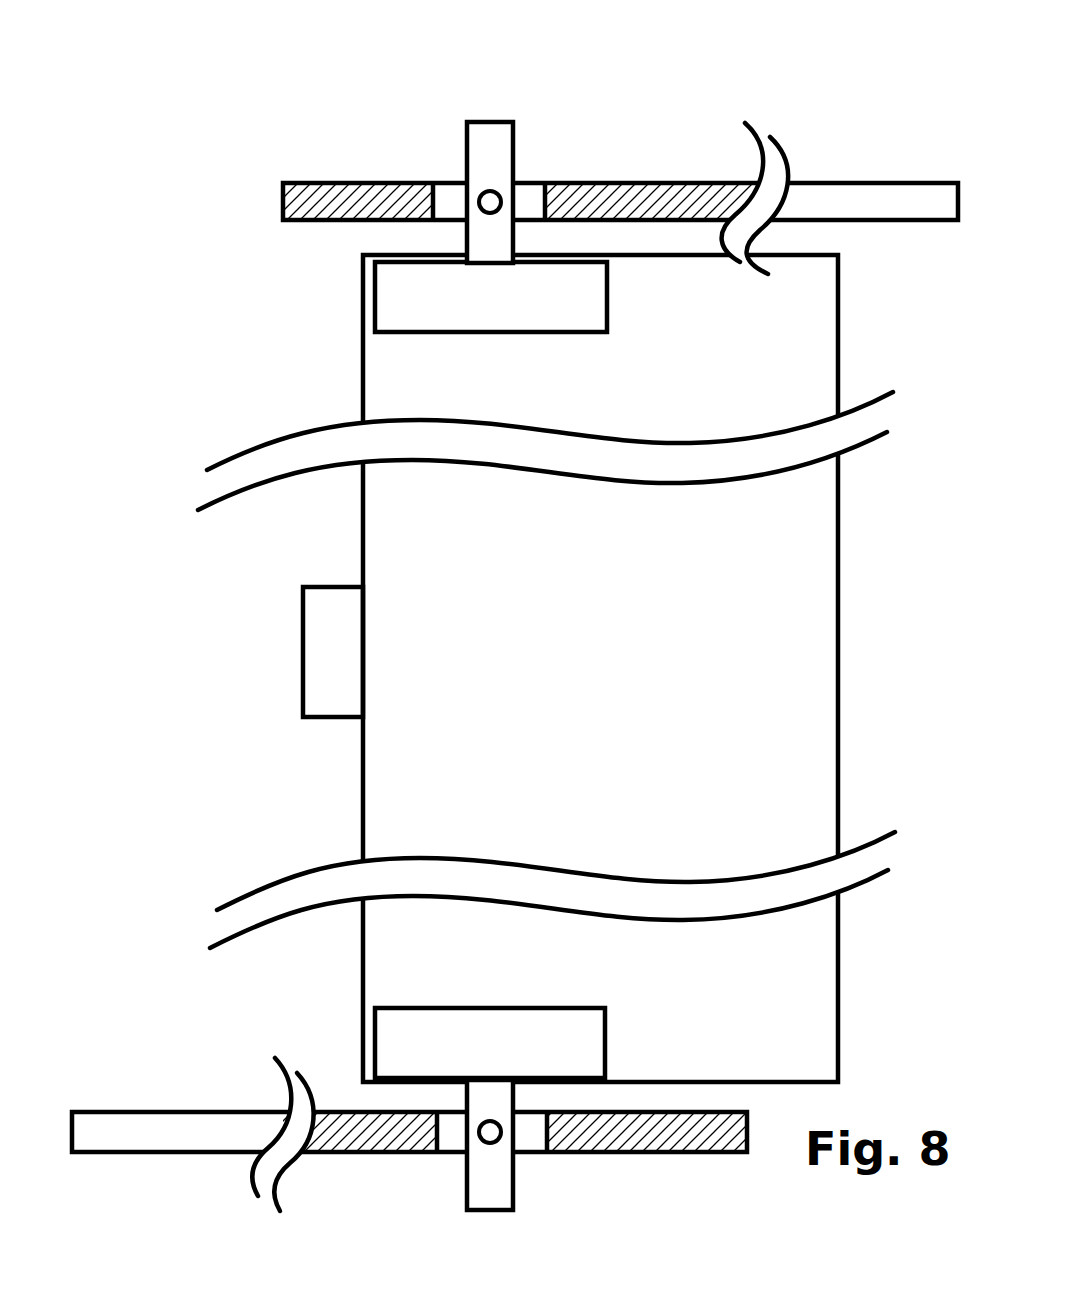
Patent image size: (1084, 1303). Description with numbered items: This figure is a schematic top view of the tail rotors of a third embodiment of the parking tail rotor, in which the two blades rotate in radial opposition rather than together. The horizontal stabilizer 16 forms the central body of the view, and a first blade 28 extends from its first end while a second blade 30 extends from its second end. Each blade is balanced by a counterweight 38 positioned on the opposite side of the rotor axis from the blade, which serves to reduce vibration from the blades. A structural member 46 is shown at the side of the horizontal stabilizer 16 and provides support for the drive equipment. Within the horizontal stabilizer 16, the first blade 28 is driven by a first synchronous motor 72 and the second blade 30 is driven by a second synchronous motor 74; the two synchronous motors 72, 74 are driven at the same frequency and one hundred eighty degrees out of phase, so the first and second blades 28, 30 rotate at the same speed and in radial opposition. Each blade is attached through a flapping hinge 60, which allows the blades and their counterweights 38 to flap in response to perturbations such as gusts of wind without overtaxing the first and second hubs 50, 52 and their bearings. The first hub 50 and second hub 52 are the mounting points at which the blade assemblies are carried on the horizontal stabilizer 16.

The horizontal stabilizer 16 is at (420, 763).
The first blade 28 is at (137, 1128).
The second blade 30 is at (850, 175).
The counterweight 38 is at (302, 182).
The structural member 46 is at (325, 648).
The first hub 50 is at (460, 1163).
The second hub 52 is at (540, 173).
The flapping hinge 60 is at (486, 200).
The first synchronous motor 72 is at (557, 1037).
The second synchronous motor 74 is at (407, 293).